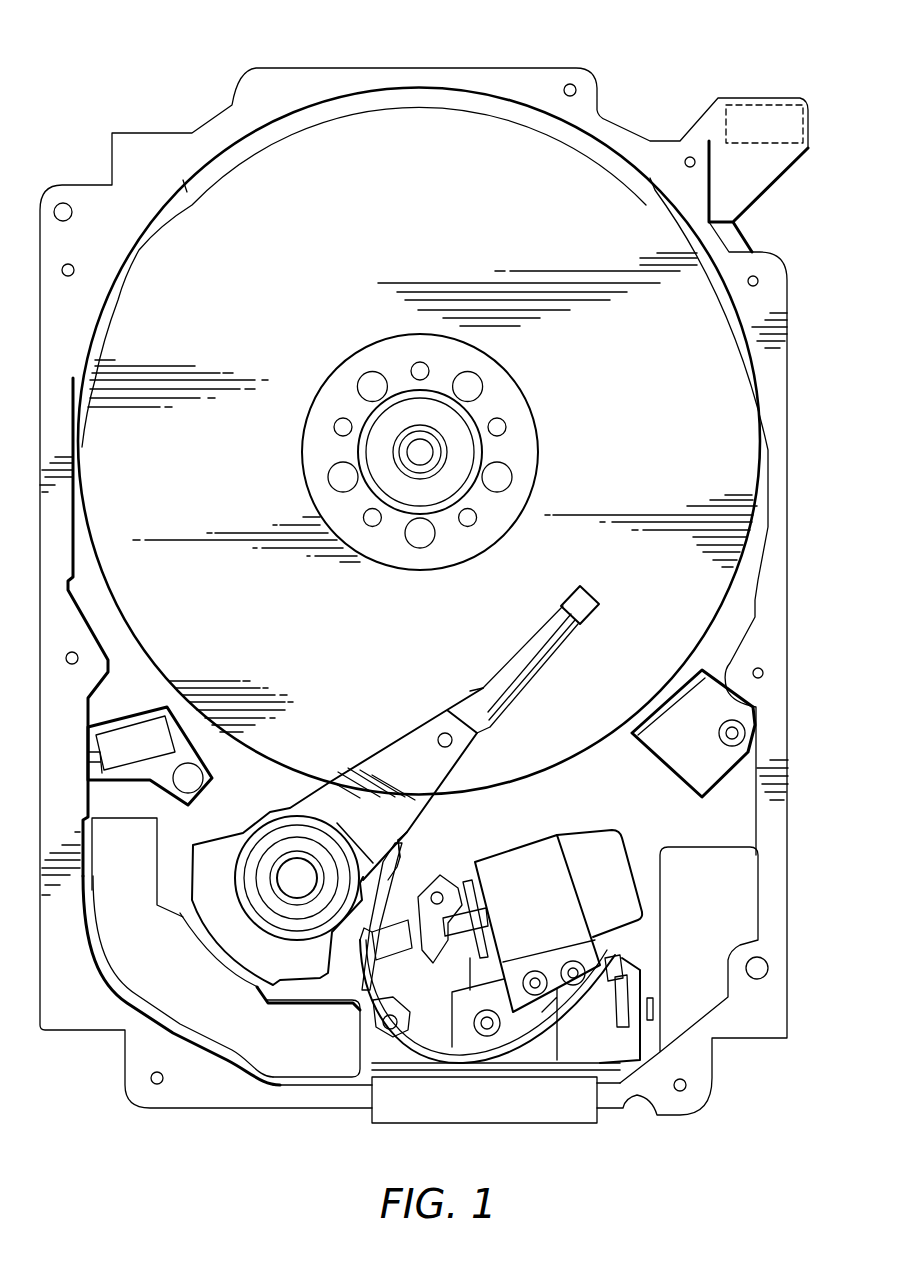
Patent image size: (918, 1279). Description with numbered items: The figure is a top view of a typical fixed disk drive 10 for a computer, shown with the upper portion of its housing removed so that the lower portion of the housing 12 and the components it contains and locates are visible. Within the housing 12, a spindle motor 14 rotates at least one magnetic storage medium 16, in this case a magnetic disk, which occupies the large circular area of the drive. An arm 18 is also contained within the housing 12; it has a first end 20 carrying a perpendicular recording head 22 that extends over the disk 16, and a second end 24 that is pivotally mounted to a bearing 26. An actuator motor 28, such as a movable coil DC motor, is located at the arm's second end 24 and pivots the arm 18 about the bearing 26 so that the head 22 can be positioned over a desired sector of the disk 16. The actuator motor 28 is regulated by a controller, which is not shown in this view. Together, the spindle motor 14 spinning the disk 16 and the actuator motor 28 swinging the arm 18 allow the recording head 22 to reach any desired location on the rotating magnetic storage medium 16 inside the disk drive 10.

The fixed disk drive 10 is at (94, 122).
The housing 12 is at (548, 78).
The spindle motor 14 is at (413, 457).
The magnetic storage medium 16 is at (306, 244).
The arm 18 is at (408, 753).
The first end 20 is at (527, 638).
The perpendicular recording head 22 is at (580, 602).
The second end 24 is at (321, 813).
The bearing 26 is at (287, 868).
The actuator motor 28 is at (166, 999).